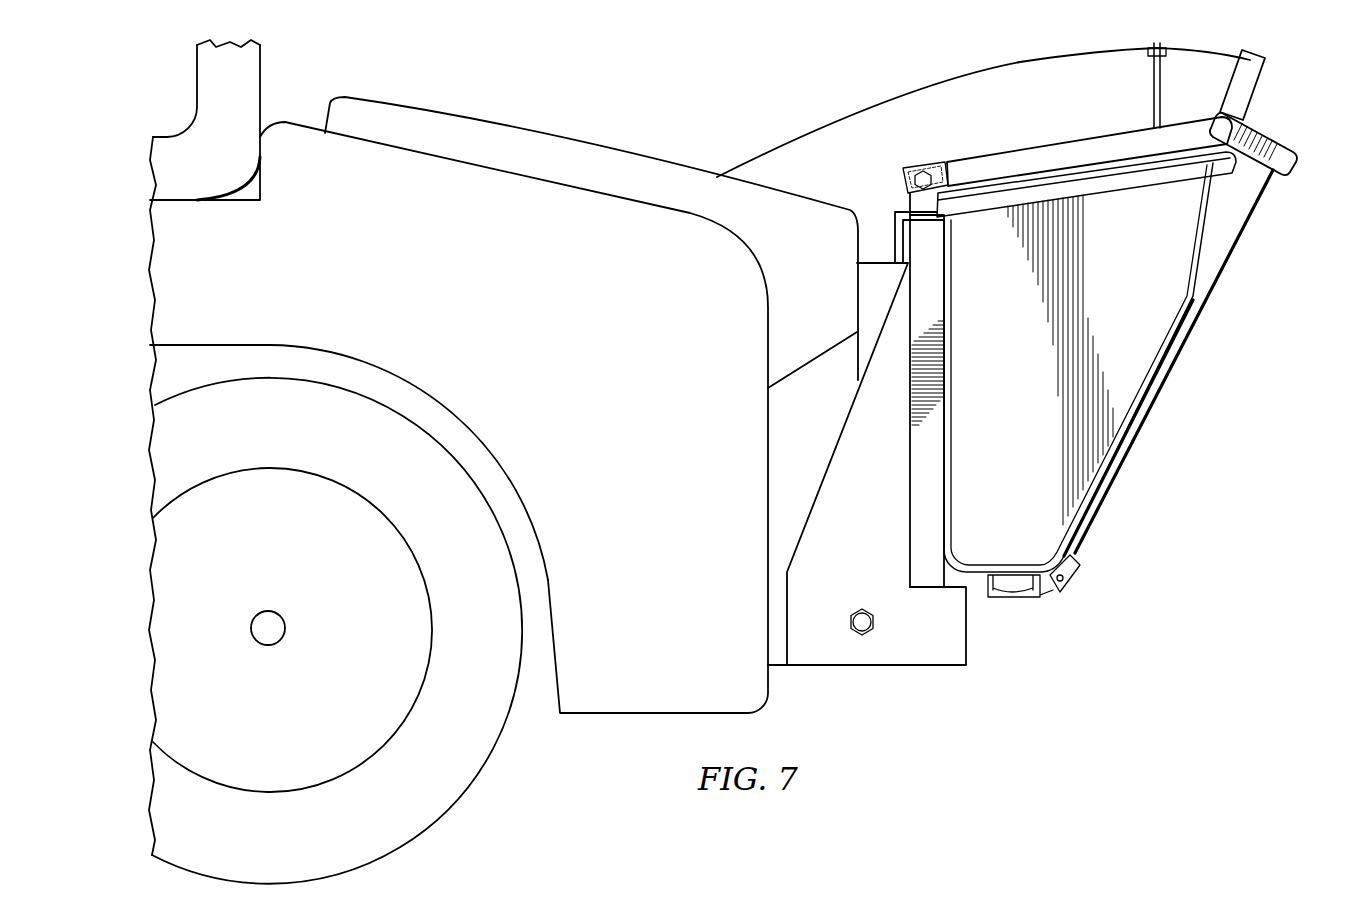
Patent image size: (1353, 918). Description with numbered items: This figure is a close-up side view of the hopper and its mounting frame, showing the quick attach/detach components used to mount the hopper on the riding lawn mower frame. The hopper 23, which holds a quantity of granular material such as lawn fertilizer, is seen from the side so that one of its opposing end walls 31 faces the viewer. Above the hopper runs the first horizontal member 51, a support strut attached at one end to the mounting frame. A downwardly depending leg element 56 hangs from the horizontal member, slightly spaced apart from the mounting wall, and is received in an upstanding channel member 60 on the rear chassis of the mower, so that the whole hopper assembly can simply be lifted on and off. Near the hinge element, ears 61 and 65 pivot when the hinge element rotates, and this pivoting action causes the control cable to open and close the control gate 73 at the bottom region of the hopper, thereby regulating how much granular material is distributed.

The hopper 23 is at (1168, 432).
The end wall 31 is at (1163, 284).
The first horizontal member 51 is at (1115, 131).
The leg element 56 is at (897, 227).
The channel member 60 is at (868, 290).
The ear 61 is at (1277, 142).
The ear 65 is at (1263, 72).
The control gate 73 is at (1010, 597).